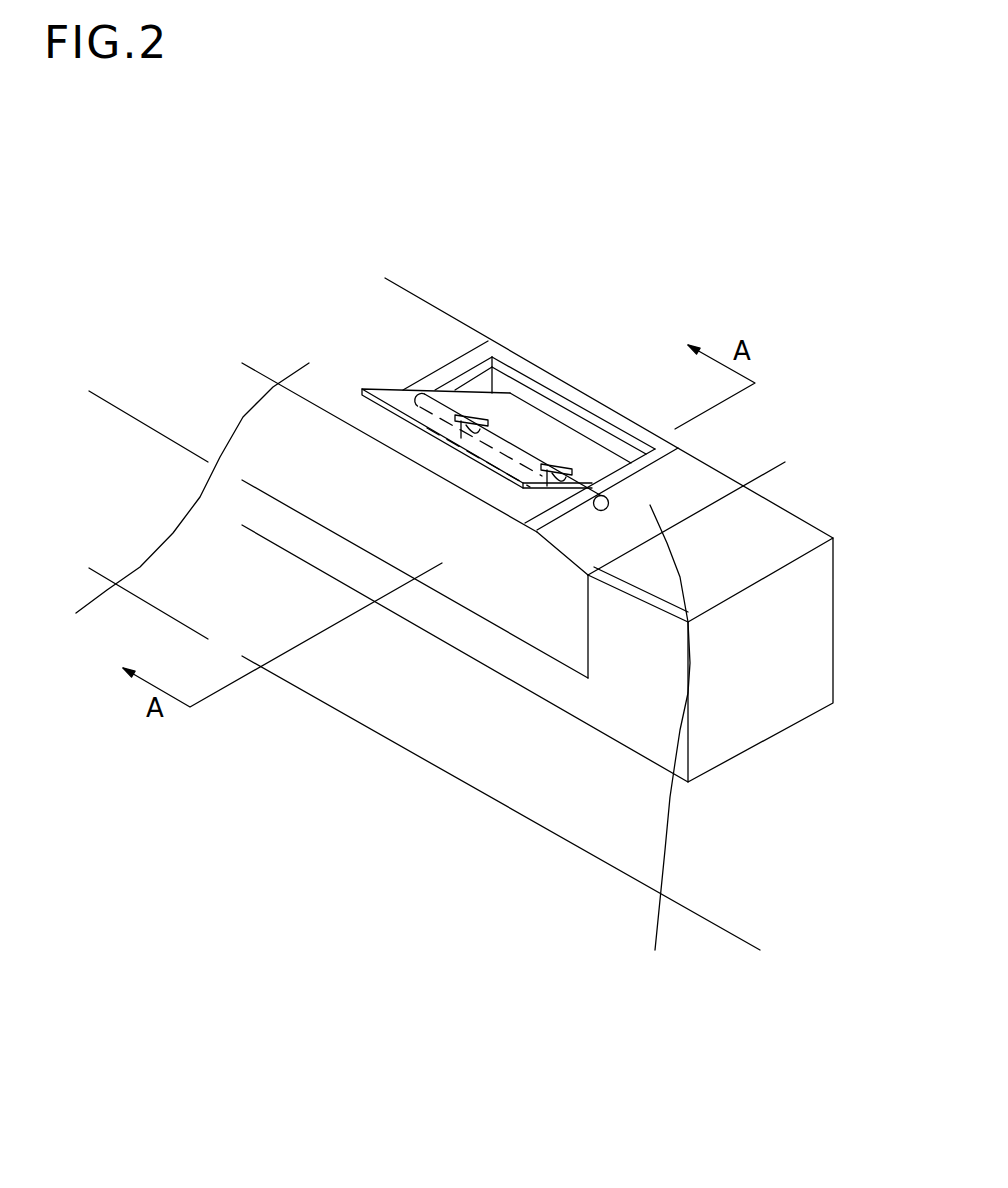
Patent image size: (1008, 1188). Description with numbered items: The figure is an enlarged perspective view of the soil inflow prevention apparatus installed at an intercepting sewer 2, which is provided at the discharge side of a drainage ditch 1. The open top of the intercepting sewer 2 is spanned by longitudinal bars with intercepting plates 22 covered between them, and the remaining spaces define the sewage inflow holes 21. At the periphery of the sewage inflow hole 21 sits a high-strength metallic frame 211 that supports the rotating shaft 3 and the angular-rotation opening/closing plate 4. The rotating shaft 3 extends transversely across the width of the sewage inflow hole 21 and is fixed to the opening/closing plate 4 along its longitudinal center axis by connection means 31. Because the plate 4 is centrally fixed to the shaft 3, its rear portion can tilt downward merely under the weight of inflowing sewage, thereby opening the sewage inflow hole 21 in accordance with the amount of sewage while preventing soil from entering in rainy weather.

The drainage ditch 1 is at (651, 530).
The intercepting sewer 2 is at (462, 650).
The sewage inflow hole 21 is at (567, 392).
The metallic frame 211 is at (550, 343).
The intercepting plate 22 is at (368, 675).
The rotating shaft 3 is at (505, 405).
The connection means 31 is at (513, 371).
The angular-rotation opening/closing plate 4 is at (512, 402).